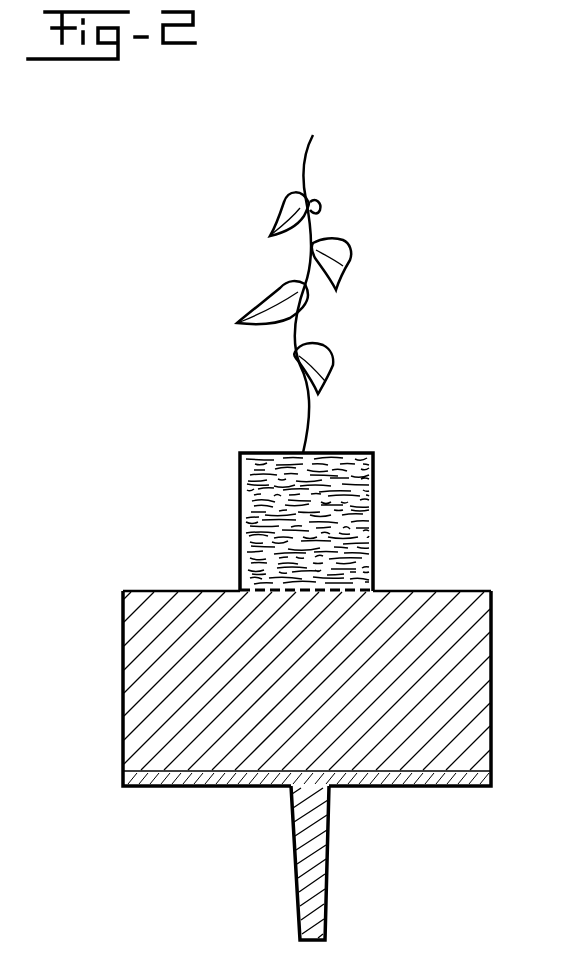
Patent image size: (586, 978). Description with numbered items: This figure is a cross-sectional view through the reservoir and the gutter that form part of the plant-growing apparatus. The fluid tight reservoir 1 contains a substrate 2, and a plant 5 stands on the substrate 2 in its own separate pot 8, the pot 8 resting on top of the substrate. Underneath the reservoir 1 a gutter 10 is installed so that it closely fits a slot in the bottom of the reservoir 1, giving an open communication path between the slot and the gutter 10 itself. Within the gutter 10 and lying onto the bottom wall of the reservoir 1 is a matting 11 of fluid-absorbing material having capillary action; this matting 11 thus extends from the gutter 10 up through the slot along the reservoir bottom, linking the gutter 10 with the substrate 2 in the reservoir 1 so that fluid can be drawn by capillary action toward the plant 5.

The fluid tight reservoir 1 is at (492, 686).
The substrate 2 is at (436, 612).
The plant 5 is at (352, 258).
The pot 8 is at (365, 504).
The gutter 10 is at (296, 846).
The matting of fluid absorbing material 11 is at (320, 848).